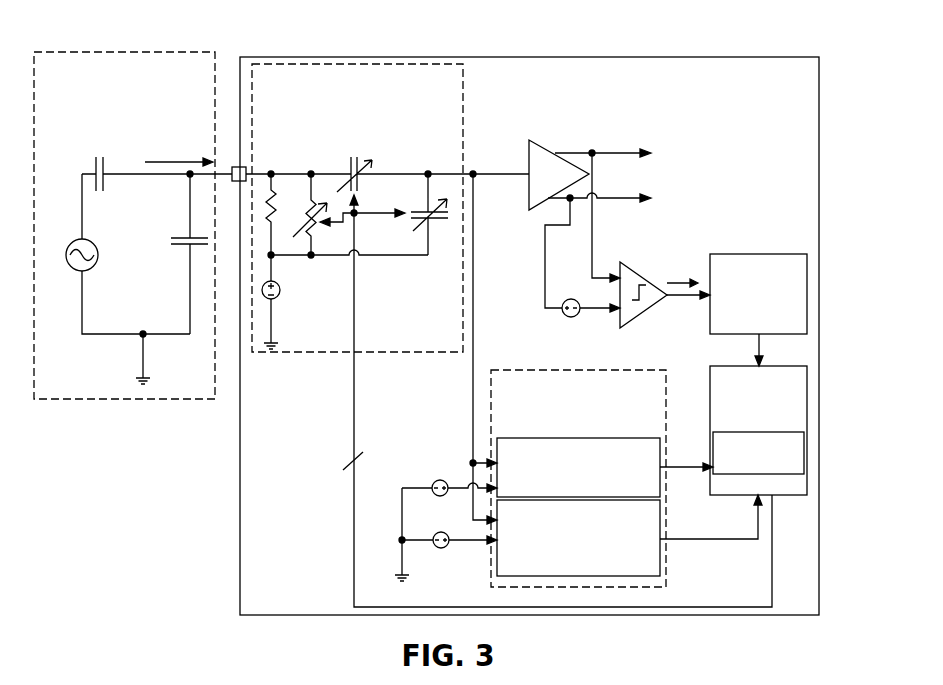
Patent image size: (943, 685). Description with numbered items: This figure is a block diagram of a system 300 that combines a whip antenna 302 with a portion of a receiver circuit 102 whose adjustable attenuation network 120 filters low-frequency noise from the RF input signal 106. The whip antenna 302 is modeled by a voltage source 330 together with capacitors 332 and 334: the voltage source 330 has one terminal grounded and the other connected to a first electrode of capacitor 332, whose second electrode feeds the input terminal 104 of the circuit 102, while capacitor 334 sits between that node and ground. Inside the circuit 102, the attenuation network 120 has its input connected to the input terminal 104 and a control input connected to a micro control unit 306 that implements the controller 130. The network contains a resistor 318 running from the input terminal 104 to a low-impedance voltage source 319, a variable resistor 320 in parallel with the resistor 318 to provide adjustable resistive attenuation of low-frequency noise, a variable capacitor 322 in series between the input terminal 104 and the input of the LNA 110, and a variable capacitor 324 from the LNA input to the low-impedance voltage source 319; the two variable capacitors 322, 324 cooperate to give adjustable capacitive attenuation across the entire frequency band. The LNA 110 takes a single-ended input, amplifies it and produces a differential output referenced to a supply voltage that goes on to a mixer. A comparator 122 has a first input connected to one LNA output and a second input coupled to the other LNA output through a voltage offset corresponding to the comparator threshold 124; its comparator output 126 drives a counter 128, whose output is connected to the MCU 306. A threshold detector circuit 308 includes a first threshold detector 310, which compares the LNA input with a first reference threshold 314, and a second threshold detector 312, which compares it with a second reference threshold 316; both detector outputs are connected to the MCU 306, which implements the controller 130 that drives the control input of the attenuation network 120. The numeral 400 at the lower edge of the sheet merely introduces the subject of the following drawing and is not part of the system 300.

The system 300 is at (128, 26).
The whip antenna 302 is at (140, 53).
The capacitor 332 is at (97, 160).
The capacitor 334 is at (183, 236).
The voltage source 330 is at (89, 268).
The RF input signal 106 is at (178, 158).
The circuit 102 is at (645, 57).
The input terminal 104 is at (244, 167).
The adjustable attenuation network 120 is at (337, 63).
The resistor 318 is at (272, 221).
The low-impedance voltage source 319 is at (280, 296).
The variable resistor 320 is at (316, 206).
The variable capacitor 322 is at (358, 176).
The variable capacitor 324 is at (443, 222).
The LNA 110 is at (536, 145).
The comparator 122 is at (645, 306).
The comparator threshold 124 is at (565, 316).
The comparator output 126 is at (665, 272).
The counter 128 is at (754, 256).
The micro control unit (MCU) 306 is at (808, 404).
The controller 130 is at (804, 447).
The threshold detector circuit 308 is at (492, 383).
The first threshold detector 310 is at (505, 449).
The second threshold detector 312 is at (659, 556).
The first reference threshold 314 is at (436, 481).
The second reference threshold 316 is at (438, 550).
The system of next figure 400 is at (127, 679).